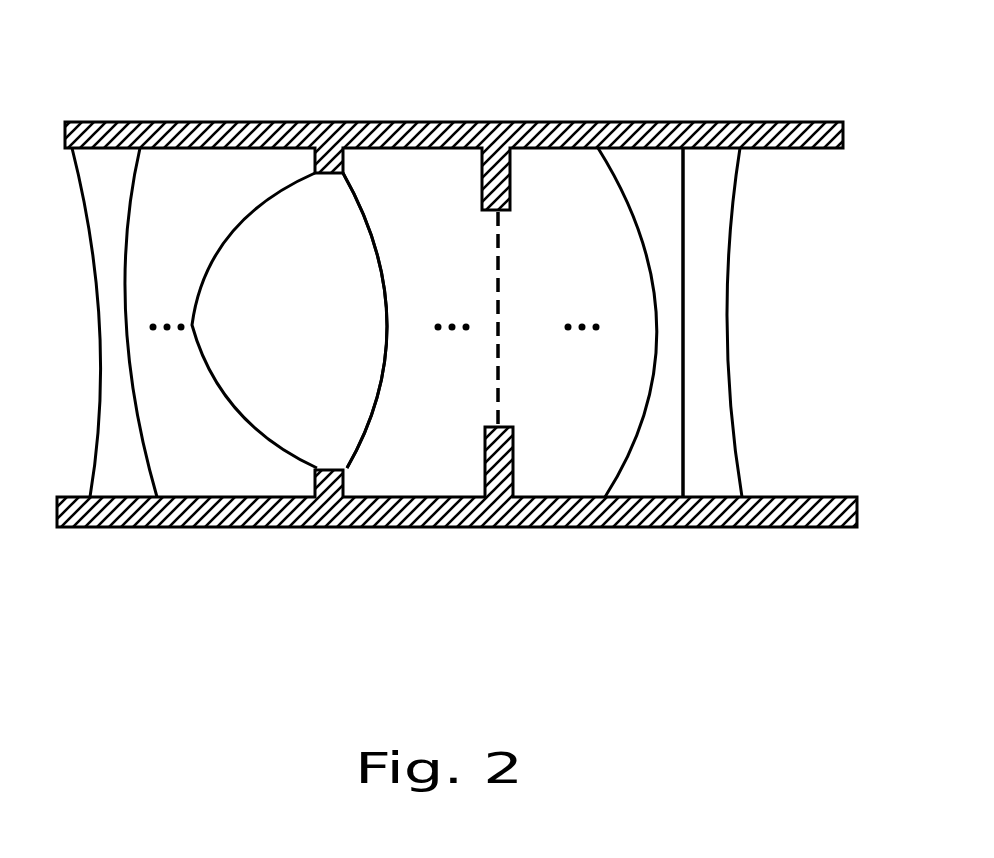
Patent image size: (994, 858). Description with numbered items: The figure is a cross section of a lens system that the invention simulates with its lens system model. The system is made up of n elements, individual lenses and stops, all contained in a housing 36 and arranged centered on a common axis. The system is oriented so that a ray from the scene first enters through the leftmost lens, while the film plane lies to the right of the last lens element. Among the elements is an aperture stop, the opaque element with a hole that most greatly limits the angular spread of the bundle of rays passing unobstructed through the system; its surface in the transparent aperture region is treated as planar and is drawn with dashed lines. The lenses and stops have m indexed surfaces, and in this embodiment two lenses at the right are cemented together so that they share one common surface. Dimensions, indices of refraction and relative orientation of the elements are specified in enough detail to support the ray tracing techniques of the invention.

The housing 36 is at (307, 122).